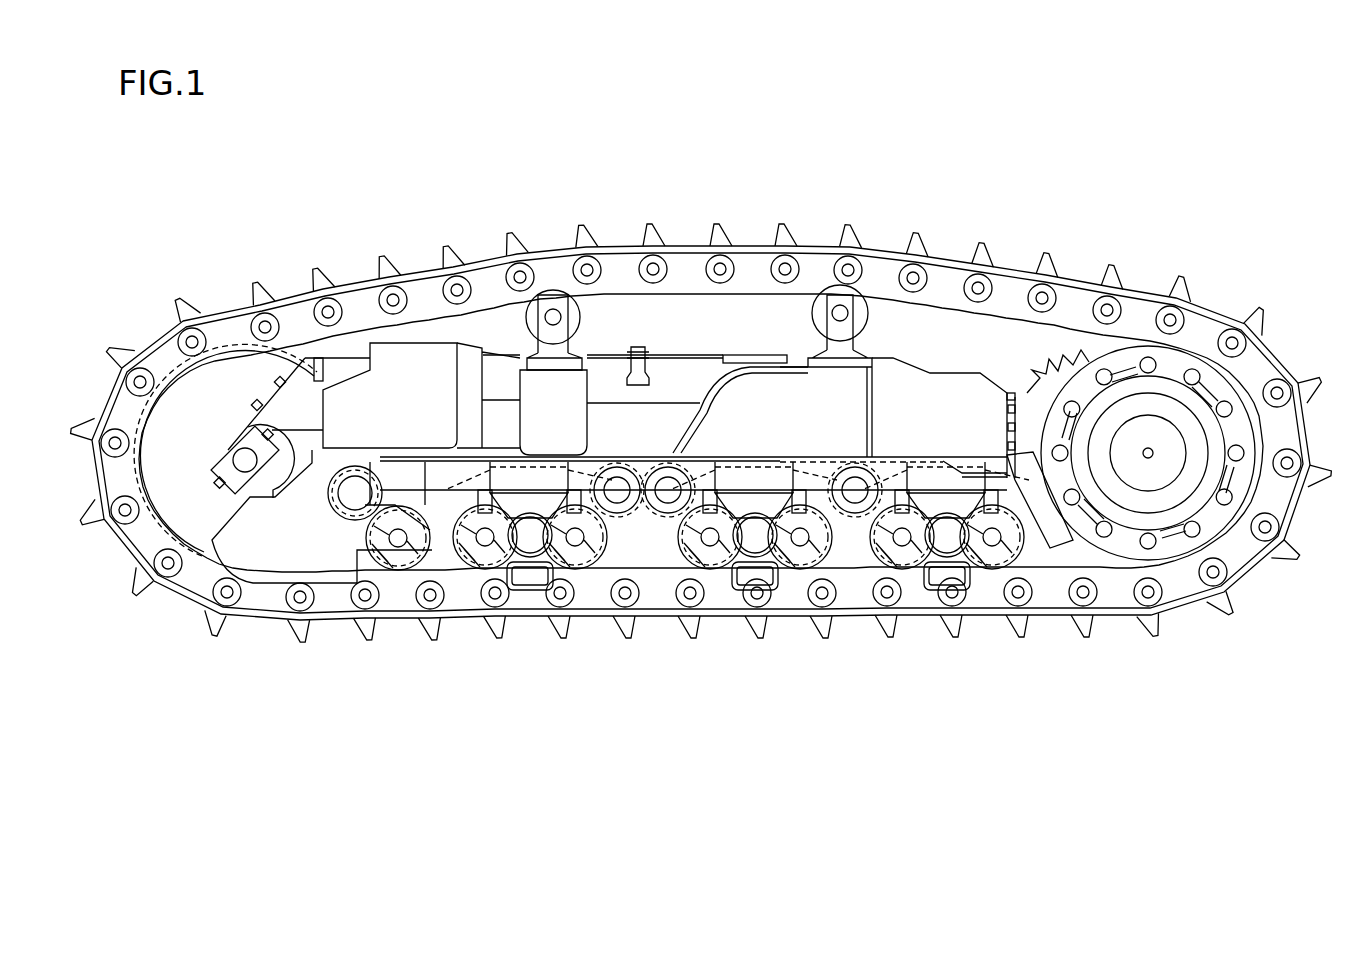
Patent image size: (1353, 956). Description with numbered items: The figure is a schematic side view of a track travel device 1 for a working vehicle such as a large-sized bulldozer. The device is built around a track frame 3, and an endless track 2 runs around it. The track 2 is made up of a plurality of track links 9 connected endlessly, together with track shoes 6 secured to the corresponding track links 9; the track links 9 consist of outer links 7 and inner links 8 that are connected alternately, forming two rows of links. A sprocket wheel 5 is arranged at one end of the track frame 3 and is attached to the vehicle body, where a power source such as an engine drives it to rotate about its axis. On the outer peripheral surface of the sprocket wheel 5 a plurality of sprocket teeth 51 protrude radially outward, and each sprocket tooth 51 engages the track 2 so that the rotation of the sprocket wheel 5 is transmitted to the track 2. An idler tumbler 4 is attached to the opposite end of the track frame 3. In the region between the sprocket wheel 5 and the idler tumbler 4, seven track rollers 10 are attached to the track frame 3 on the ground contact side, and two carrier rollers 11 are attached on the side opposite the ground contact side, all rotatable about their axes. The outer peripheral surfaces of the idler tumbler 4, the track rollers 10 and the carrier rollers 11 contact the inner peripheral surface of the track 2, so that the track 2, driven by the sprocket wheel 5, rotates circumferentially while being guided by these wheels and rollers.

The track travel device 1 is at (1229, 217).
The track 2 is at (749, 235).
The track frame 3 is at (673, 378).
The idler tumbler 4 is at (228, 385).
The sprocket wheel 5 is at (1173, 390).
The sprocket teeth 51 is at (1040, 385).
The track shoe 6 is at (293, 623).
The outer link 7 is at (358, 316).
The inner link 8 is at (425, 300).
The track links 9 is at (428, 220).
The track rollers 10 is at (395, 572).
The carrier rollers 11 is at (552, 297).